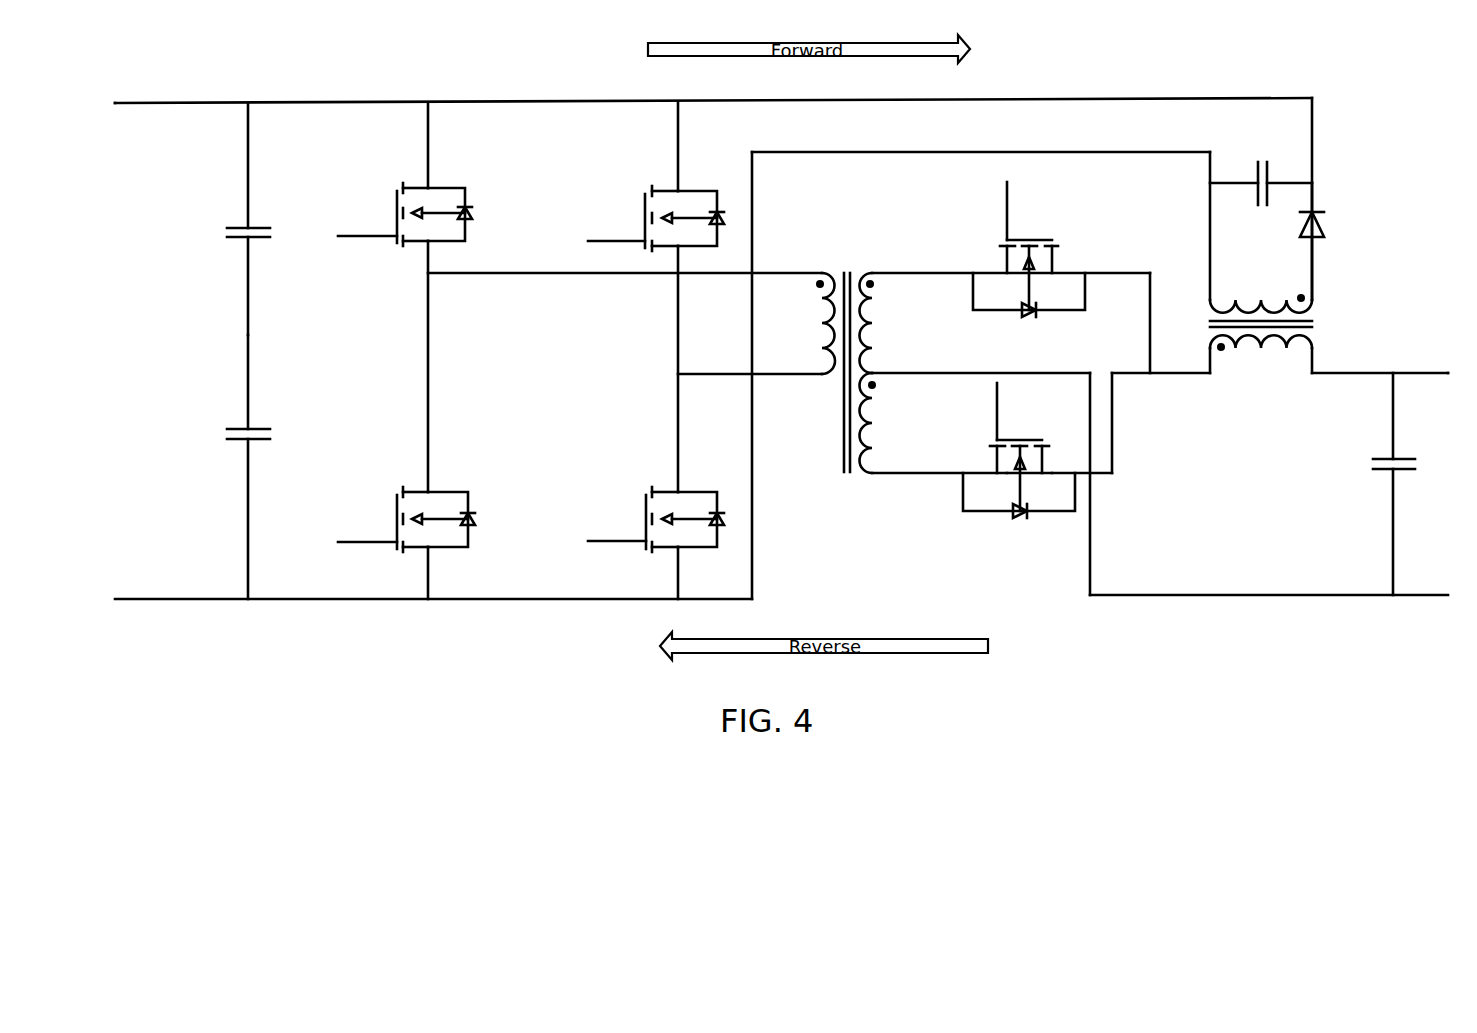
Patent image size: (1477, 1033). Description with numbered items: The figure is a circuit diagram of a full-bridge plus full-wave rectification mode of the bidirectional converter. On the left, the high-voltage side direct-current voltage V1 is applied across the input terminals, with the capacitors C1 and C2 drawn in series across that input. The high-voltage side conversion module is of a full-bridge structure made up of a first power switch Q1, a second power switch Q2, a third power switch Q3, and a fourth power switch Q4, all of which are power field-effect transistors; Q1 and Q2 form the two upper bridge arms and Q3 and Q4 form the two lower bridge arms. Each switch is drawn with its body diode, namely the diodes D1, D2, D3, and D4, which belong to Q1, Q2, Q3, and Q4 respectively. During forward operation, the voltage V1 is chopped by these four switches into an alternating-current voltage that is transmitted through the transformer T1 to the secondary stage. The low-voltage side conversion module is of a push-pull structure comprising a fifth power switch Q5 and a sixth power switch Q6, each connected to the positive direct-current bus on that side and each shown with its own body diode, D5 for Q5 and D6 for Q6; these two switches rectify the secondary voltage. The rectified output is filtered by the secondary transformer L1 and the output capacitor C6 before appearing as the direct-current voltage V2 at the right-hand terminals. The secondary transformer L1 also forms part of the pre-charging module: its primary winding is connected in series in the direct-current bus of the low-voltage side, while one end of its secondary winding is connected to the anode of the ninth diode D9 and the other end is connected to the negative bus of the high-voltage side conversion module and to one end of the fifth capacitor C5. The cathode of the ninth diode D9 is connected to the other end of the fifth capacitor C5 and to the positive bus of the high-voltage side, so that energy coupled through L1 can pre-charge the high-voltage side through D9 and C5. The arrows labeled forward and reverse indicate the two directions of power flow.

The high-voltage side direct-current voltage V1 is at (119, 349).
The first input capacitor C1 is at (263, 219).
The second input capacitor C2 is at (263, 467).
The first power switch Q1 is at (401, 209).
The first diode D1 is at (466, 214).
The second power switch Q2 is at (652, 214).
The second diode D2 is at (716, 218).
The third power switch Q3 is at (403, 513).
The third diode D3 is at (467, 519).
The fourth power switch Q4 is at (652, 514).
The fourth diode D4 is at (716, 519).
The transformer T1 is at (846, 356).
The fifth power switch Q5 is at (1001, 246).
The fifth diode D5 is at (1029, 309).
The sixth power switch Q6 is at (996, 447).
The sixth diode D6 is at (1019, 509).
The fifth capacitor C5 is at (1261, 194).
The ninth diode D9 is at (1329, 241).
The secondary transformer L1 is at (1245, 333).
The output capacitor C6 is at (1377, 484).
The direct-current voltage V2 is at (1444, 482).